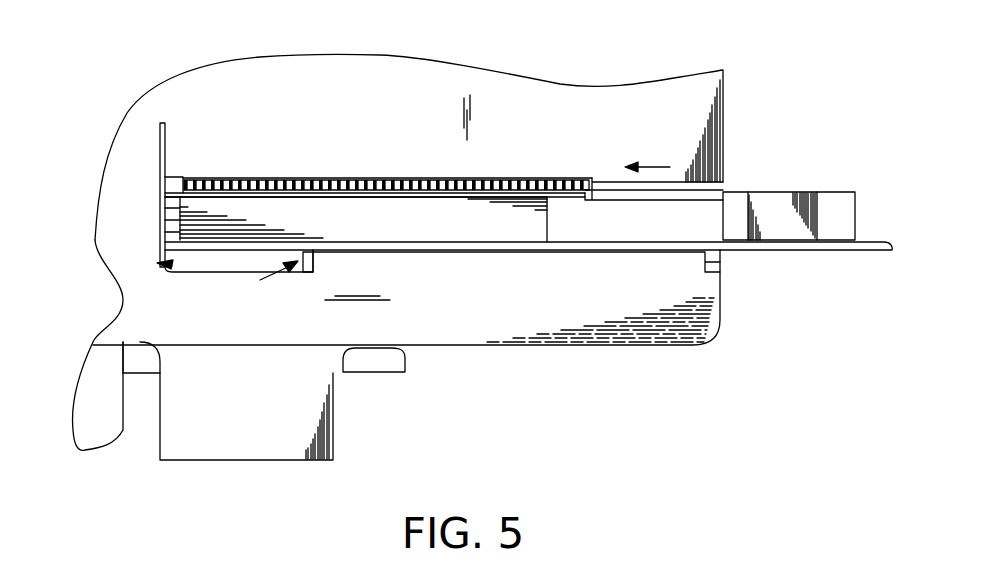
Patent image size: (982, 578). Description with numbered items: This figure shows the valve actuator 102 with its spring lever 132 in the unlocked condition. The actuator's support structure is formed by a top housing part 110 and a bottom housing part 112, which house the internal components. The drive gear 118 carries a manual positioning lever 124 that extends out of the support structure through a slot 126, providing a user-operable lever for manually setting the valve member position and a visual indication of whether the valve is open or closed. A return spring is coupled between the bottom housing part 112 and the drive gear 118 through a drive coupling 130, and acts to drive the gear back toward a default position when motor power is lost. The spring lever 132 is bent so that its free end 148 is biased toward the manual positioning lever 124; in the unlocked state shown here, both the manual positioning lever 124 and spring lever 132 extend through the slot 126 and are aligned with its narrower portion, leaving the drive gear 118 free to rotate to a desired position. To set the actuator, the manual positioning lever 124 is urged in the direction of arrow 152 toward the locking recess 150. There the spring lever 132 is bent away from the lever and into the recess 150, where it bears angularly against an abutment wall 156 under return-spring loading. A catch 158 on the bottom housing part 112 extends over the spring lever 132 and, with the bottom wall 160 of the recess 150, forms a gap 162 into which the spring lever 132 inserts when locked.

The valve actuator 102 is at (816, 125).
The top housing part 110 is at (717, 82).
The bottom housing part 112 is at (708, 287).
The drive gear 118 is at (528, 180).
The manual positioning lever 124 is at (848, 217).
The slot 126 is at (608, 178).
The drive coupling 130 is at (517, 233).
The spring lever 132 is at (477, 245).
The free end 148 is at (893, 250).
The locking recess 150 is at (165, 265).
The arrow 152 is at (655, 165).
The abutment wall 156 is at (293, 256).
The catch 158 is at (303, 252).
The bottom wall 160 is at (240, 272).
The gap 162 is at (265, 278).